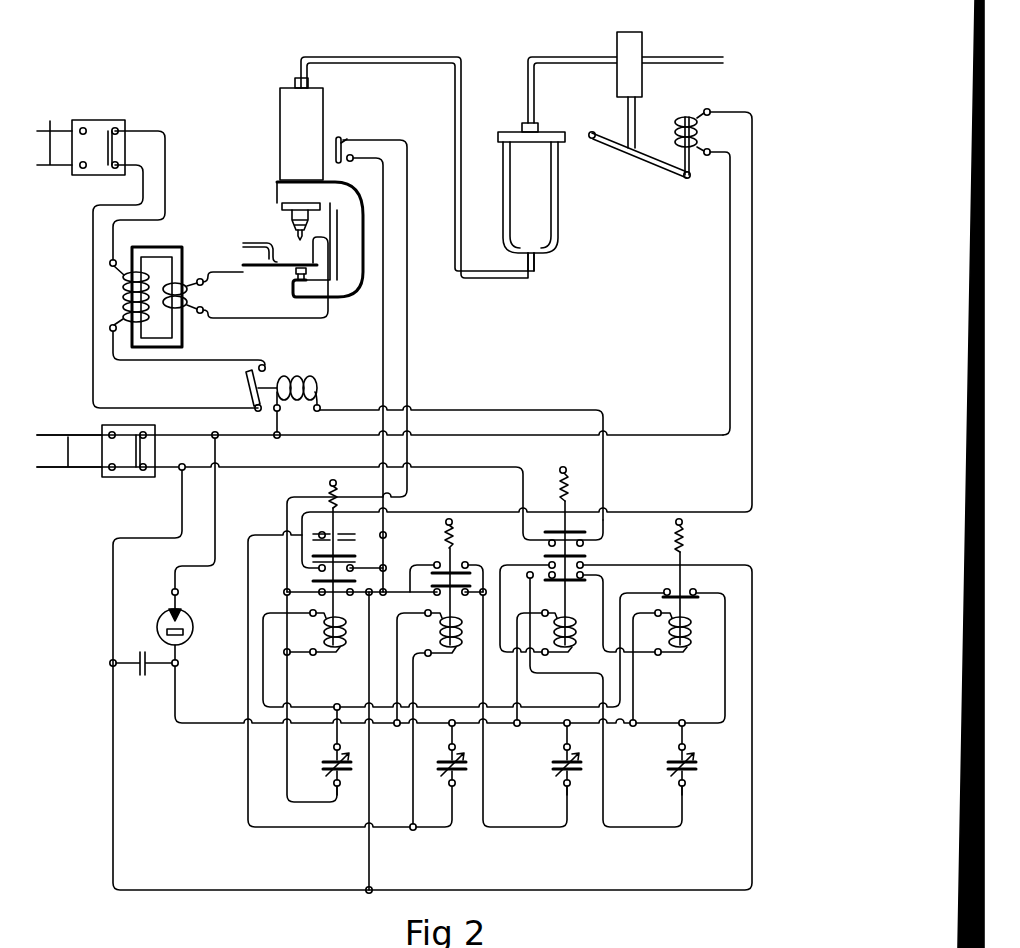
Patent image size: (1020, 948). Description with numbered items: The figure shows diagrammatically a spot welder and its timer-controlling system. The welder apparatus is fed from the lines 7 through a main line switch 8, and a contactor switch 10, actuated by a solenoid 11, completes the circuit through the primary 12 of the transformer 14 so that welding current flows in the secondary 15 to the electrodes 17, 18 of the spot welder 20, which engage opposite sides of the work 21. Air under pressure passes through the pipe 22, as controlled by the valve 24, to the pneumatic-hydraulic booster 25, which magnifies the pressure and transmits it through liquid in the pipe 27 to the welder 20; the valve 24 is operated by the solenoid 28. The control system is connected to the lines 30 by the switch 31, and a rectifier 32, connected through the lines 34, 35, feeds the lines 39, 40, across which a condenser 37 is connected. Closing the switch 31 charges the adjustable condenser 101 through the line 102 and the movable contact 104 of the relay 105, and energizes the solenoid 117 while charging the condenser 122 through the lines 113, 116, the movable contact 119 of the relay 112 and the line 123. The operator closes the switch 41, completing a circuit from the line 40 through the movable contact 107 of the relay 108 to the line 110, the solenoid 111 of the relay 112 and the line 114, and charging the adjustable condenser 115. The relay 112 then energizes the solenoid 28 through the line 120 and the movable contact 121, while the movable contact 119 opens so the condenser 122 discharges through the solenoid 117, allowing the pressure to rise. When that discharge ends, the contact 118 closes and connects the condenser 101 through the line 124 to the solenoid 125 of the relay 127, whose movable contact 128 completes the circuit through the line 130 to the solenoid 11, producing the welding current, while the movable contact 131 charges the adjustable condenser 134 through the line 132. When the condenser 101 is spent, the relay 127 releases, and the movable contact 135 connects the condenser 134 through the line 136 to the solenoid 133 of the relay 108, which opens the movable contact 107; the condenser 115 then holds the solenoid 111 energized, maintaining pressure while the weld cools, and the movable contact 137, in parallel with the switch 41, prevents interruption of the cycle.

The lines 7 is at (54, 134).
The main line switch 8 is at (117, 120).
The contactor switch 10 is at (248, 395).
The solenoid 11 is at (298, 376).
The primary 12 is at (123, 301).
The transformer 14 is at (162, 249).
The secondary 15 is at (190, 281).
The electrode 17 is at (294, 277).
The electrode 18 is at (297, 237).
The spot welder 20 is at (280, 148).
The work 21 is at (251, 245).
The pipe 22 is at (698, 57).
The valve 24 is at (643, 60).
The pneumatic-hydraulic booster 25 is at (545, 219).
The pipe 27 is at (410, 57).
The solenoid 28 is at (699, 130).
The lines 30 is at (69, 466).
The switch 31 is at (127, 478).
The rectifier 32 is at (192, 619).
The line 34 is at (729, 286).
The line 35 is at (218, 506).
The condenser 37 is at (144, 678).
The line 39 is at (382, 324).
The line 40 is at (178, 698).
The switch 41 is at (347, 144).
The adjustable condenser 101 is at (555, 759).
The line 102 is at (516, 827).
The movable contact 104 is at (432, 584).
The relay 105 is at (432, 571).
The movable contact 107 is at (690, 594).
The relay 108 is at (690, 606).
The line 110 is at (283, 593).
The solenoid 111 is at (347, 648).
The relay 112 is at (348, 576).
The line 113 is at (414, 692).
The line 114 is at (408, 329).
The adjustable condenser 115 is at (328, 775).
The line 116 is at (303, 836).
The solenoid 117 is at (459, 650).
The contact 118 is at (453, 550).
The movable contact 119 is at (316, 526).
The line 120 is at (753, 253).
The movable contact 121 is at (353, 562).
The condenser 122 is at (441, 776).
The line 123 is at (353, 556).
The line 124 is at (502, 571).
The solenoid 125 is at (577, 648).
The relay 127 is at (586, 552).
The movable contact 128 is at (545, 529).
The line 130 is at (332, 410).
The movable contact 131 is at (586, 556).
The line 132 is at (532, 598).
The solenoid 133 is at (690, 650).
The adjustable condenser 134 is at (670, 759).
The movable contact 135 is at (575, 584).
The line 136 is at (604, 583).
The movable contact 137 is at (313, 582).